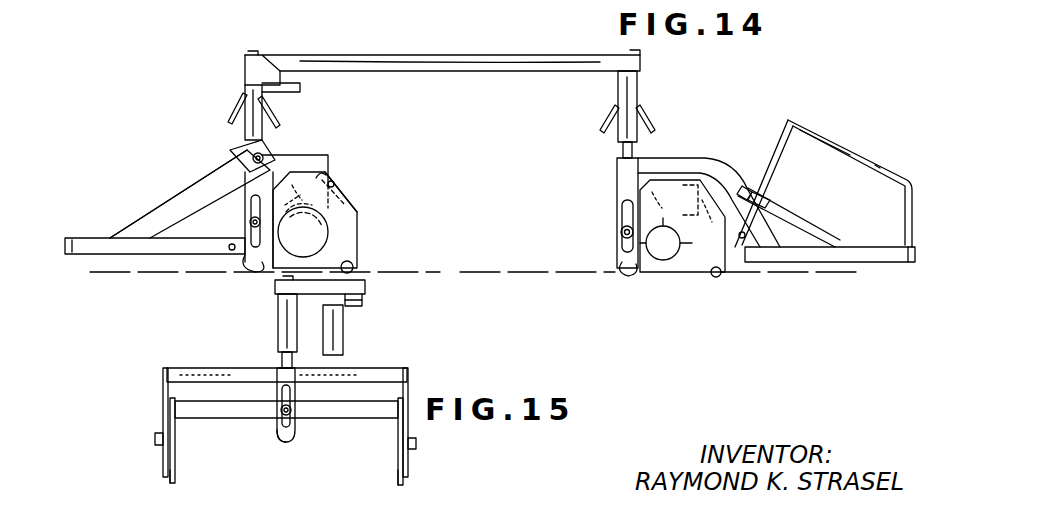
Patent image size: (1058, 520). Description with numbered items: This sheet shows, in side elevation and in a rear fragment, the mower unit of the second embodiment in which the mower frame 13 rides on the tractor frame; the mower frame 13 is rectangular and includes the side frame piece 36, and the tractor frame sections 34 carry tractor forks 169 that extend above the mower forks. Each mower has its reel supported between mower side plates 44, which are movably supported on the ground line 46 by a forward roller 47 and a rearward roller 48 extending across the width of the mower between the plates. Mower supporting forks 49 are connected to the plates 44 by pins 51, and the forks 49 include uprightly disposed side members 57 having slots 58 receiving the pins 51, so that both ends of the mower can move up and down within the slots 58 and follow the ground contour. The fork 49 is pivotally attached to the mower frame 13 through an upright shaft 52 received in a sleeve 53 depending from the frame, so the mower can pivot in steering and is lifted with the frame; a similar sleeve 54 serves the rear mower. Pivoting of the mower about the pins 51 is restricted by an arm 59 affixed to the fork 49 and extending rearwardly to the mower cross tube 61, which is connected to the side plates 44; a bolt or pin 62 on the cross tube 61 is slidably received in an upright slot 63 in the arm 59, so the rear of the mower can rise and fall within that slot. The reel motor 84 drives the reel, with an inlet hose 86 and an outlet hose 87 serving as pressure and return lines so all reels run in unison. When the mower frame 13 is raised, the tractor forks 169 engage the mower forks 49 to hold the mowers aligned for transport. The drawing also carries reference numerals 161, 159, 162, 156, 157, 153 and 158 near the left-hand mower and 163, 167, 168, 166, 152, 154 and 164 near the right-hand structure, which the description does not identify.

In FIG. 14, the mower frame 13 is at (417, 55).
In FIG. 14, the side frame piece 36 is at (490, 61).
In FIG. 15, the side frame piece 36 is at (274, 285).
In FIG. 14, the tractor frame section 34 is at (300, 88).
In FIG. 15, the tractor frame section 34 is at (362, 294).
In FIG. 14, the vertical post 161 is at (243, 130).
In FIG. 14, the tractor fork 169 is at (277, 114).
In FIG. 15, the tractor fork 169 is at (340, 338).
In FIG. 14, the pivot block 159 is at (240, 148).
In FIG. 14, the arm 59 is at (310, 155).
In FIG. 15, the arm 59 is at (296, 387).
In FIG. 14, the mower side plate 44 is at (350, 224).
In FIG. 15, the mower side plate 44 is at (176, 478).
In FIG. 14, the pin 51 is at (265, 225).
In FIG. 15, the pin 51 is at (155, 439).
In FIG. 14, the bolt or pin 62 is at (334, 182).
In FIG. 15, the bolt or pin 62 is at (296, 413).
In FIG. 14, the inclined wall 162 is at (352, 210).
In FIG. 14, the rearward roller 48 is at (353, 271).
In FIG. 14, the forward roller 47 is at (248, 263).
In FIG. 14, the slot 58 is at (252, 222).
In FIG. 14, the horizontal arm 156 is at (94, 238).
In FIG. 14, the diagonal brace 157 is at (203, 203).
In FIG. 14, the bracket arm 153 is at (153, 212).
In FIG. 14, the pin 158 is at (229, 247).
In FIG. 14, the ground line 46 is at (455, 272).
In FIG. 14, the sleeve 54 is at (618, 96).
In FIG. 14, the mower supporting fork 49 is at (618, 181).
In FIG. 15, the mower supporting fork 49 is at (190, 376).
In FIG. 14, the outlet hose 87 is at (620, 218).
In FIG. 14, the reel motor 84 is at (668, 262).
In FIG. 14, the inlet hose 86 is at (690, 213).
In FIG. 14, the curved pipe arm 163 is at (714, 160).
In FIG. 14, the pivot 167 is at (742, 185).
In FIG. 14, the clamp 168 is at (768, 198).
In FIG. 14, the diagonal strut 166 is at (786, 220).
In FIG. 14, the panel 152 is at (822, 152).
In FIG. 14, the bottom bar 154 is at (858, 263).
In FIG. 14, the pin 164 is at (752, 246).
In FIG. 15, the sleeve 53 is at (278, 316).
In FIG. 15, the upright shaft 52 is at (282, 360).
In FIG. 15, the side member 57 is at (163, 394).
In FIG. 15, the mower cross tube 61 is at (224, 419).
In FIG. 15, the slot 63 is at (276, 436).